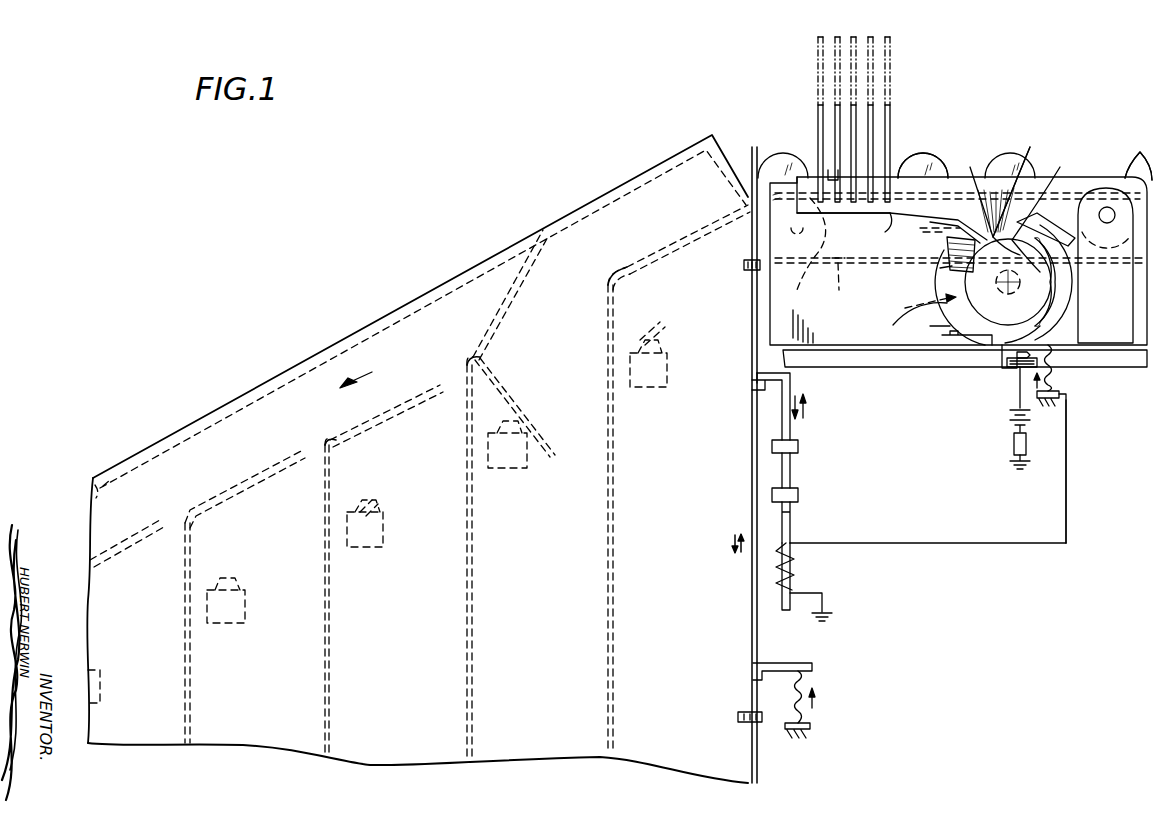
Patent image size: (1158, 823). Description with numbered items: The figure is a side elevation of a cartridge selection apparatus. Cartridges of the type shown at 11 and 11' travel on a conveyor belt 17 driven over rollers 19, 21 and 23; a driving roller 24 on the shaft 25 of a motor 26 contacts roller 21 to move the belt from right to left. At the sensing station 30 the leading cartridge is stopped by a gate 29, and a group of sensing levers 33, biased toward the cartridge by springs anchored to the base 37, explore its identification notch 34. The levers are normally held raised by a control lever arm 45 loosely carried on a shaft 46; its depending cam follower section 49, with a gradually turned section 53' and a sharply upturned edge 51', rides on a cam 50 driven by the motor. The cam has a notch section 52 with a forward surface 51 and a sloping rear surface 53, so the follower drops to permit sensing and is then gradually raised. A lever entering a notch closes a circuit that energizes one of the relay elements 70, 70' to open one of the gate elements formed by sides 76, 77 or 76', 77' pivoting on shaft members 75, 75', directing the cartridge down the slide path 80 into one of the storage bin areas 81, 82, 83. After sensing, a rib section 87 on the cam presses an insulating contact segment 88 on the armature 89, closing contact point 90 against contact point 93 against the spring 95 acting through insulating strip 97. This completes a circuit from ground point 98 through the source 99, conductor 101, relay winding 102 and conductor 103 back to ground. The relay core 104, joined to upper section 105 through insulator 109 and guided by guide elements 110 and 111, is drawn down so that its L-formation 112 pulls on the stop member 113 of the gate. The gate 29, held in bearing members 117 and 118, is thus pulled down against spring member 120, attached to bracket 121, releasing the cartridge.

The cartridge 11 is at (934, 143).
The cartridge 11' is at (1135, 144).
The conveyor belt 17 is at (844, 283).
The roller 19 is at (1105, 265).
The roller 21 is at (938, 245).
The roller 23 is at (804, 252).
The driving roller 24 is at (917, 305).
The shaft 25 is at (1008, 282).
The motor 26 is at (910, 320).
The gate 29 is at (752, 150).
The sensing station 30 is at (955, 219).
The sensing levers 33 is at (815, 50).
The identification notch 34 is at (838, 172).
The base 37 is at (815, 745).
The control lever arm 45 is at (880, 224).
The shaft 46 is at (1098, 215).
The cam follower section 49 is at (992, 189).
The cam 50 is at (947, 278).
The forward notch surface 51 is at (1043, 210).
The tooth edge 51' is at (1023, 189).
The notch section 52 is at (1045, 275).
The rear notch surface 53 is at (933, 274).
The downwardly turned section 53' is at (926, 226).
The relay element 70 is at (656, 384).
The relay element 70' is at (513, 470).
The shaft member 75 is at (645, 284).
The shaft member 75' is at (510, 357).
The gate element side 76 is at (679, 244).
The gate element side 76' is at (515, 297).
The gate element side 77 is at (663, 329).
The gate element side 77' is at (524, 407).
The slide path 80 is at (417, 459).
The storage bin area 81 is at (605, 522).
The storage bin area 82 is at (439, 600).
The storage bin area 83 is at (297, 596).
The rib section 87 is at (1068, 293).
The insulating contact segment 88 is at (927, 326).
The armature 89 is at (1055, 365).
The contact point 90 is at (1002, 362).
The contact point 93 is at (1018, 368).
The spring 95 is at (1062, 394).
The insulating strip 97 is at (1040, 326).
The ground point 98 is at (824, 622).
The source 99 is at (1027, 440).
The conductor 101 is at (1008, 545).
The relay winding 102 is at (795, 568).
The conductor 103 is at (830, 604).
The relay core 104 is at (795, 535).
The upper section 105 is at (800, 466).
The insulator 109 is at (795, 512).
The guide element 110 is at (800, 495).
The guide element 111 is at (800, 445).
The L-formation 112 is at (757, 372).
The stop member 113 is at (757, 378).
The bearing member 117 is at (744, 268).
The bearing member 118 is at (738, 717).
The spring member 120 is at (805, 686).
The bracket 121 is at (786, 663).